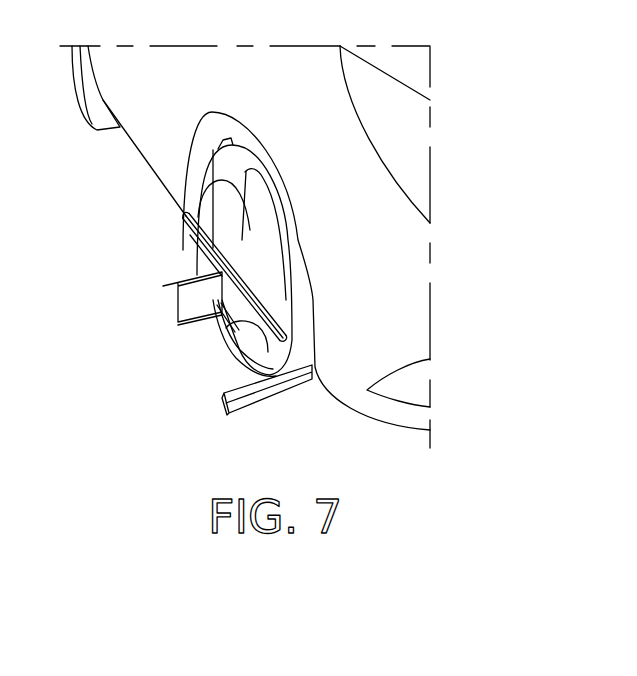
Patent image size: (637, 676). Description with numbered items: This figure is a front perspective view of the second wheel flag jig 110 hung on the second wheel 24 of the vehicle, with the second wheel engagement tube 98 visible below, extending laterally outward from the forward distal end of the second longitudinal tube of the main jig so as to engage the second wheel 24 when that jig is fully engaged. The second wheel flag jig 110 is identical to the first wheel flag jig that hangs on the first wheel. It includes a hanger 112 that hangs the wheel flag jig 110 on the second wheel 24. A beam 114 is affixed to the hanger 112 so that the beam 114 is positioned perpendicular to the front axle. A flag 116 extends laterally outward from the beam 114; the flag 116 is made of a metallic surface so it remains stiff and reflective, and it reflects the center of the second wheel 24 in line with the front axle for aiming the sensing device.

The second wheel 24 is at (228, 332).
The second wheel engagement tube 98 is at (262, 385).
The second wheel flag jig 110 is at (178, 237).
The hanger 112 is at (185, 212).
The beam 114 is at (237, 345).
The flag 116 is at (190, 297).